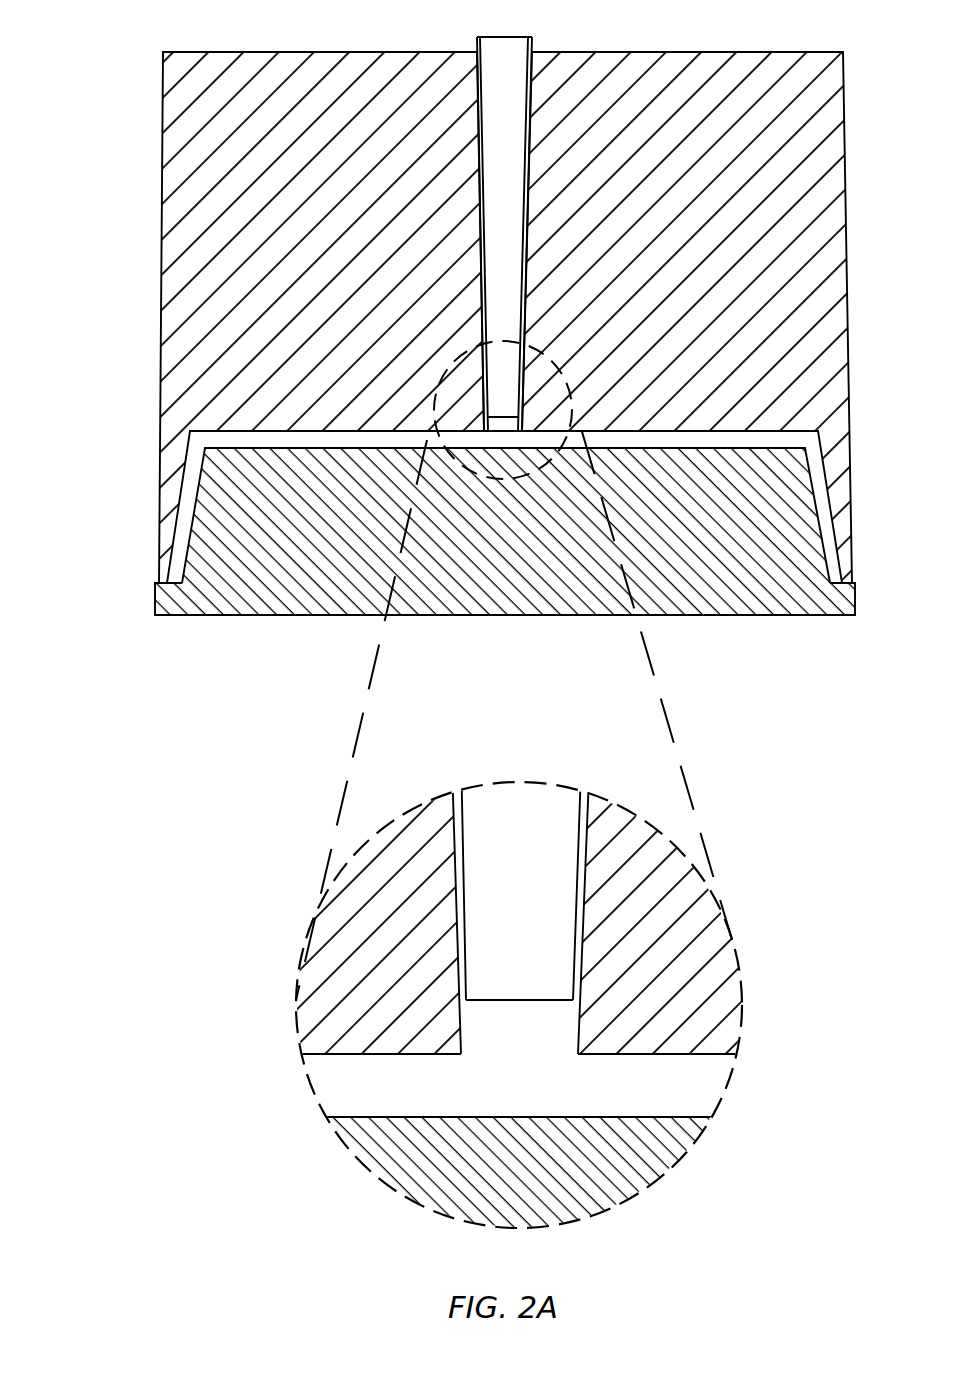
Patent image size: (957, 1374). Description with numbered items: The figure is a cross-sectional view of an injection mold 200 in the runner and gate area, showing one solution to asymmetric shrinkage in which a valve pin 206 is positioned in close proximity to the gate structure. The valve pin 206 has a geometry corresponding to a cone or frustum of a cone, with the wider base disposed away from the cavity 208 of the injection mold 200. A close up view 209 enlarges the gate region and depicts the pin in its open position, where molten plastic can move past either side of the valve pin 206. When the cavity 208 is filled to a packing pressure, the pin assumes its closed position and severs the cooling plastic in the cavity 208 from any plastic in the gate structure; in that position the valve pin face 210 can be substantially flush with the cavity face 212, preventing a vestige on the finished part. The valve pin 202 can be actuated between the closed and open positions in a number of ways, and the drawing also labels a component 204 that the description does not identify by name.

The injection mold 200 is at (128, 90).
The valve pin 202 is at (159, 375).
The lower body 204 is at (155, 605).
The valve pin 206 is at (520, 145).
The cavity 208 is at (822, 447).
The close up view 209 is at (538, 784).
The valve pin face 210 is at (527, 1003).
The cavity face 212 is at (413, 1055).